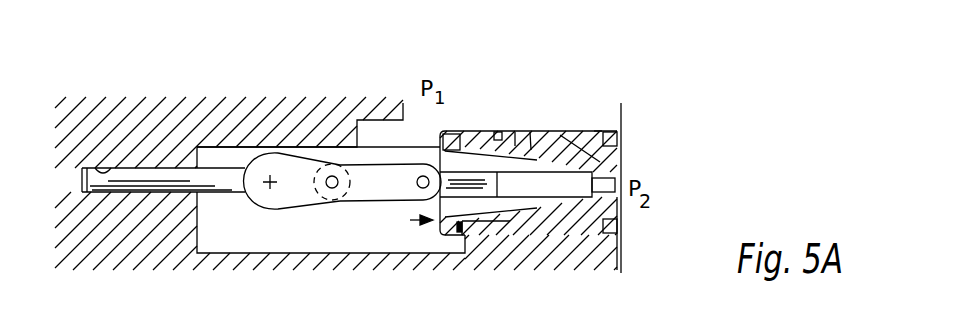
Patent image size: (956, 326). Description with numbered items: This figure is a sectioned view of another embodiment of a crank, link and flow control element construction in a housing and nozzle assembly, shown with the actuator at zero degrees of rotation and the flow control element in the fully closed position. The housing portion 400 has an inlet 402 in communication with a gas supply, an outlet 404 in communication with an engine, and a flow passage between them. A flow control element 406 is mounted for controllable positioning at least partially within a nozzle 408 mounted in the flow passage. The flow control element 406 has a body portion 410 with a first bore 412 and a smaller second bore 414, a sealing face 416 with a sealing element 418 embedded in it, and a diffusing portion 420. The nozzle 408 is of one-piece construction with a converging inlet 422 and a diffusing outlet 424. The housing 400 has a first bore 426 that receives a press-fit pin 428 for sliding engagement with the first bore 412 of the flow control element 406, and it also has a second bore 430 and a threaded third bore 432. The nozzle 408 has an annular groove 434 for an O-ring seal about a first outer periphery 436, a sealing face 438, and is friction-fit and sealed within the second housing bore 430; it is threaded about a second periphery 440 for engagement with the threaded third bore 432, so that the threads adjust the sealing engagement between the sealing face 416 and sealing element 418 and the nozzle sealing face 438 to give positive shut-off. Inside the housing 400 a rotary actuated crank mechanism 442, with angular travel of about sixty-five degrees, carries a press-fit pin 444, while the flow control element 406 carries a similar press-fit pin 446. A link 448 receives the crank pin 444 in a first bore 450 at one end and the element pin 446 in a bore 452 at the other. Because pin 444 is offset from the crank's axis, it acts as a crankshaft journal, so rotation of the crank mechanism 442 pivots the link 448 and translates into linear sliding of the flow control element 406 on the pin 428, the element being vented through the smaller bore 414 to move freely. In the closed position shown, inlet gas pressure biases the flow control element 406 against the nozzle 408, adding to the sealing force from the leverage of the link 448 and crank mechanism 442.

The housing portion 400 is at (145, 117).
The inlet 402 is at (413, 117).
The outlet 404 is at (624, 210).
The flow control element 406 is at (412, 220).
The nozzle 408 is at (623, 128).
The body portion 410 is at (443, 222).
The first bore 412 is at (560, 131).
The second bore 414 is at (627, 160).
The sealing face 416 is at (480, 131).
The sealing element 418 is at (449, 131).
The diffusing portion 420 is at (625, 205).
The converging inlet 422 is at (513, 131).
The diffusing outlet 424 is at (623, 158).
The first bore 426 is at (107, 168).
The press-fit pin 428 is at (87, 168).
The second bore 430 is at (597, 125).
The threaded third bore 432 is at (622, 112).
The annular groove 434 is at (530, 131).
The first outer periphery 436 is at (498, 131).
The sealing face 438 is at (458, 240).
The second periphery 440 is at (605, 250).
The crank mechanism 442 is at (253, 168).
The press-fit pin 444 is at (323, 177).
The press-fit pin 446 is at (355, 170).
The link 448 is at (412, 174).
The first bore 450 is at (280, 209).
The bore 452 is at (330, 186).